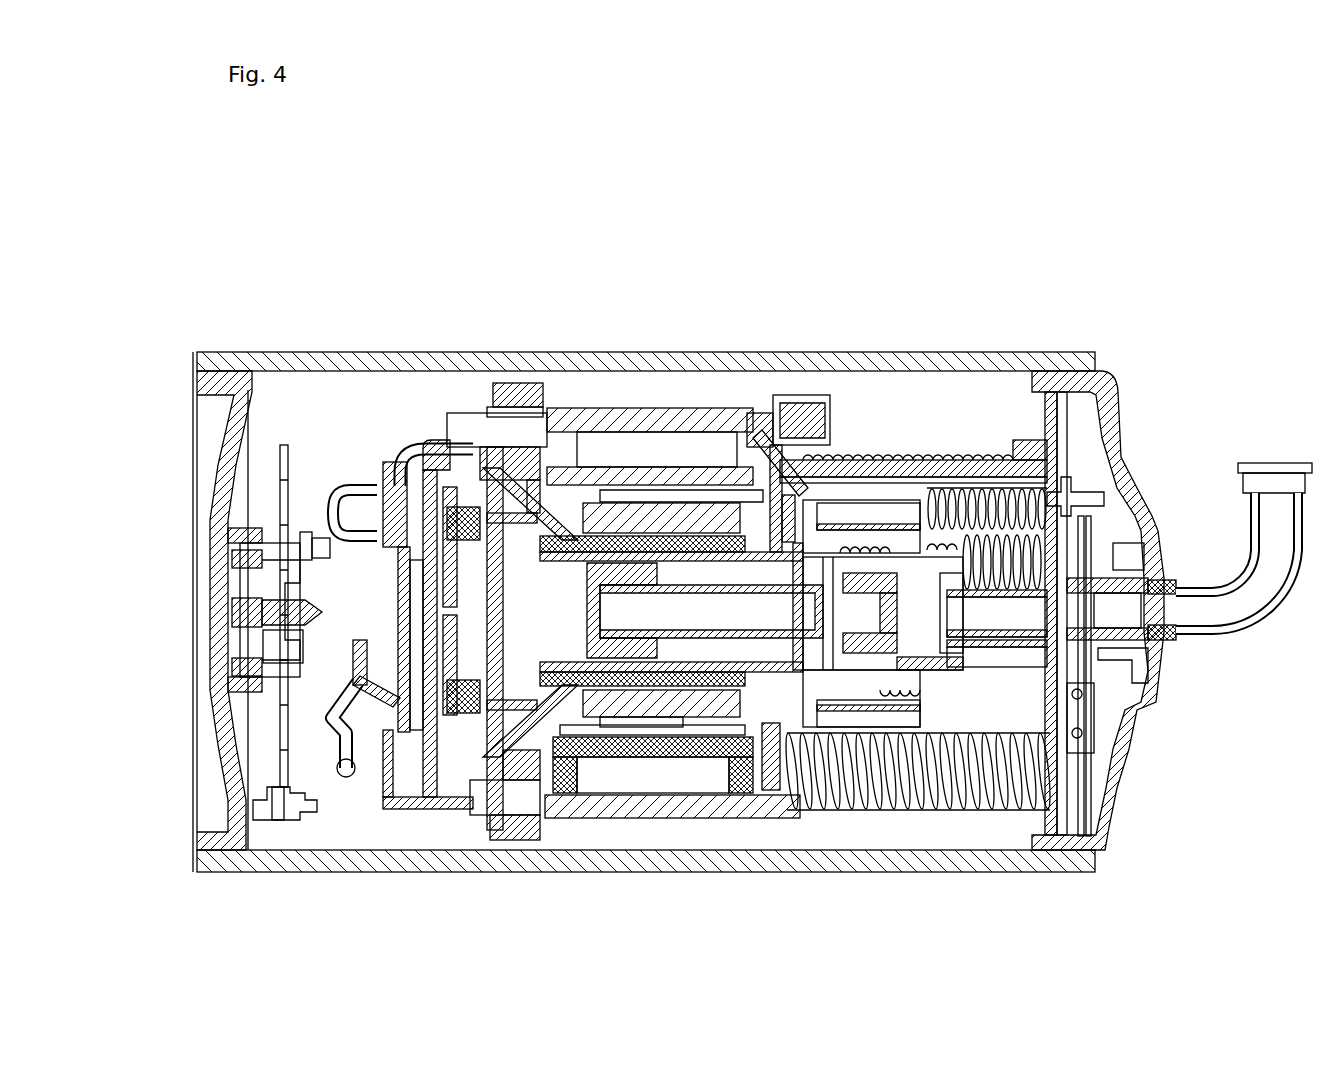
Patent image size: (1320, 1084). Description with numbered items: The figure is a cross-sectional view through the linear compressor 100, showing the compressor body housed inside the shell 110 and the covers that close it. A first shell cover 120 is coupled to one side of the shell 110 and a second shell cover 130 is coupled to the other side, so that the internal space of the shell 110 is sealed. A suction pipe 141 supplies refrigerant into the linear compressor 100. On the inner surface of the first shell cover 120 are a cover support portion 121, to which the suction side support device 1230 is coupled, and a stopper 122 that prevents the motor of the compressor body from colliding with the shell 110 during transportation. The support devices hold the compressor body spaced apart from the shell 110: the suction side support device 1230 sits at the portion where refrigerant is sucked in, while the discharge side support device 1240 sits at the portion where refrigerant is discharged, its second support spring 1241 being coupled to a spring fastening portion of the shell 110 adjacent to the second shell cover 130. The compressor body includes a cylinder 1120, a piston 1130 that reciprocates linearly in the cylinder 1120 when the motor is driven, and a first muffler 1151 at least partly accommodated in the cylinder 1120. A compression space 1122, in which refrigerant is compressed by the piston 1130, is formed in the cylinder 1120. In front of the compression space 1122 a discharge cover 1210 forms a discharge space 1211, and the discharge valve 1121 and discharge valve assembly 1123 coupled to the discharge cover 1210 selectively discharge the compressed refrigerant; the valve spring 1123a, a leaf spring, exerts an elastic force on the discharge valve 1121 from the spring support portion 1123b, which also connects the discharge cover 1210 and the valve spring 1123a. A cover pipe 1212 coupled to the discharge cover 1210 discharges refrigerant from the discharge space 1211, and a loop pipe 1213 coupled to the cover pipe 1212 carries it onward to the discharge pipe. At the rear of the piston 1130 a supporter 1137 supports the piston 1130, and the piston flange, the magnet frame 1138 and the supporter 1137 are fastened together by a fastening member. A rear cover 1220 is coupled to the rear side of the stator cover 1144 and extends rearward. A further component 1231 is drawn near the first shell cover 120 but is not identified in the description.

The linear compressor 100 is at (676, 240).
The shell 110 is at (934, 368).
The first shell cover 120 is at (1122, 398).
The cover support portion 121 is at (1140, 560).
The stopper 122 is at (1063, 395).
The second shell cover 130 is at (205, 470).
The suction pipe 141 is at (1262, 614).
The cylinder 1120 is at (628, 757).
The discharge valve 1121 is at (470, 650).
The compression space 1122 is at (500, 566).
The discharge valve assembly 1123 is at (458, 705).
The valve spring 1123a is at (435, 583).
The spring support portion 1123b is at (474, 410).
The piston 1130 is at (697, 717).
The supporter 1137 is at (876, 500).
The magnet frame 1138 is at (778, 405).
The stator cover 1144 is at (800, 395).
The first muffler 1151 is at (752, 640).
The discharge cover 1210 is at (400, 460).
The discharge space 1211 is at (420, 637).
The cover pipe 1212 is at (365, 483).
The loop pipe 1213 is at (343, 747).
The rear cover 1220 is at (985, 440).
The suction side support device 1230 is at (1108, 488).
The discharge valve 1231 is at (1150, 662).
The discharge side support device 1240 is at (267, 395).
The second support spring 1241 is at (284, 445).